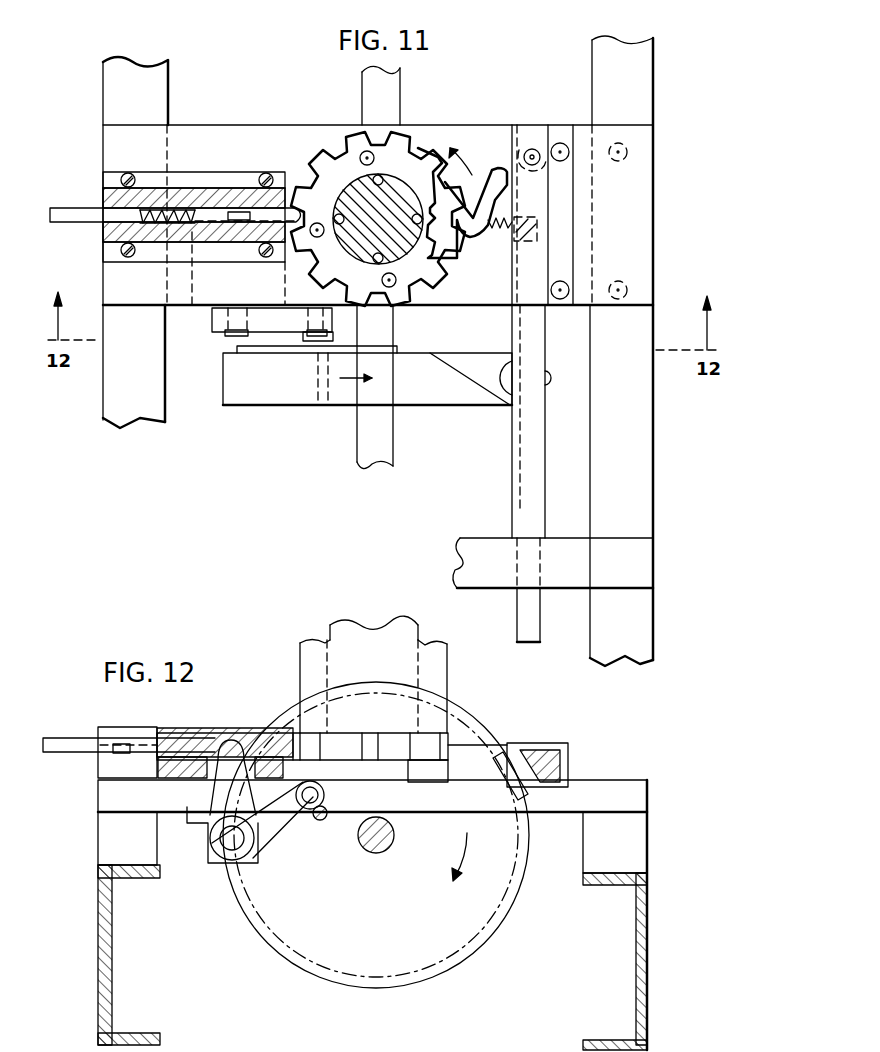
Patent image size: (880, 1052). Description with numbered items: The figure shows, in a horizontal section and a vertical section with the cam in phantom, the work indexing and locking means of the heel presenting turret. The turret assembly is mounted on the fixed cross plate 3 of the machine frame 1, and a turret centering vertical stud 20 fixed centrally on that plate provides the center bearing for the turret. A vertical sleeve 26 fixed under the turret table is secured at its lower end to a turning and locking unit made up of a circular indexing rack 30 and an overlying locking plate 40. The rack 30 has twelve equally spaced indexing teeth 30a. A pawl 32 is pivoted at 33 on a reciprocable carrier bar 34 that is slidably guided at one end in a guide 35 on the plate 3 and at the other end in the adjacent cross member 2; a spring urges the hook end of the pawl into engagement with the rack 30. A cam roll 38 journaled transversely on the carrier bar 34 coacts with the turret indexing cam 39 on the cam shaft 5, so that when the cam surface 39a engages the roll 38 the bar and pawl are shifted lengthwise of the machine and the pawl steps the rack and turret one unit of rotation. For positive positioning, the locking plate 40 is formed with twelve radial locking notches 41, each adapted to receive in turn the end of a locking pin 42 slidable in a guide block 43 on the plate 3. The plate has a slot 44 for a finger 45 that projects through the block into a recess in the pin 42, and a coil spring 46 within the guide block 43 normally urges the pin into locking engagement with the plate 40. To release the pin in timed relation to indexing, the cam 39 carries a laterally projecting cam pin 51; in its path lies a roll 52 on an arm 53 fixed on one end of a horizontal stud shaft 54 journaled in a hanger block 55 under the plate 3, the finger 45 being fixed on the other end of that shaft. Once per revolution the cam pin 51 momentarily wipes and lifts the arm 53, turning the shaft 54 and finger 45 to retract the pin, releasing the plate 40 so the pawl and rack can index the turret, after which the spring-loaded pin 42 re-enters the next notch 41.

In FIG. 11, the frame column 1 is at (108, 85).
In FIG. 11, the cross member 2 is at (481, 580).
In FIG. 11, the cross plate 3 is at (213, 136).
In FIG. 12, the cross plate 3 is at (630, 792).
In FIG. 11, the cam shaft 5 is at (357, 437).
In FIG. 12, the cam shaft 5 is at (394, 840).
In FIG. 11, the turret centering vertical stud 20 is at (338, 148).
In FIG. 12, the turret centering vertical stud 20 is at (360, 622).
In FIG. 12, the vertical sleeve 26 is at (437, 671).
In FIG. 11, the circular indexing rack 30 is at (448, 243).
In FIG. 12, the circular indexing rack 30 is at (428, 776).
In FIG. 11, the indexing teeth 30a is at (448, 277).
In FIG. 11, the pawl 32 is at (480, 160).
In FIG. 11, the pivot 33 is at (536, 150).
In FIG. 11, the carrier bar 34 is at (543, 448).
In FIG. 12, the carrier bar 34 is at (523, 748).
In FIG. 11, the guide 35 is at (568, 240).
In FIG. 12, the guide 35 is at (568, 772).
In FIG. 11, the cam roll 38 is at (500, 364).
In FIG. 12, the cam roll 38 is at (528, 806).
In FIG. 11, the turret indexing cam 39 is at (304, 406).
In FIG. 12, the turret indexing cam 39 is at (512, 902).
In FIG. 11, the cam surface 39a is at (462, 372).
In FIG. 11, the locking plate 40 is at (405, 140).
In FIG. 12, the locking plate 40 is at (447, 735).
In FIG. 11, the radial locking notches 41 is at (308, 178).
In FIG. 12, the radial locking notches 41 is at (376, 740).
In FIG. 11, the locking pin 42 is at (212, 208).
In FIG. 12, the locking pin 42 is at (252, 740).
In FIG. 11, the guide block 43 is at (102, 235).
In FIG. 12, the slot 44 is at (215, 780).
In FIG. 11, the finger 45 is at (238, 221).
In FIG. 12, the finger 45 is at (214, 790).
In FIG. 11, the coil spring 46 is at (158, 240).
In FIG. 12, the coil spring 46 is at (180, 740).
In FIG. 11, the cam pin 51 is at (333, 338).
In FIG. 12, the cam pin 51 is at (322, 822).
In FIG. 11, the roll 52 is at (304, 346).
In FIG. 12, the roll 52 is at (304, 810).
In FIG. 11, the arm 53 is at (252, 330).
In FIG. 12, the arm 53 is at (258, 863).
In FIG. 11, the stud shaft 54 is at (232, 336).
In FIG. 12, the stud shaft 54 is at (228, 868).
In FIG. 11, the hanger block 55 is at (190, 304).
In FIG. 12, the hanger block 55 is at (215, 866).